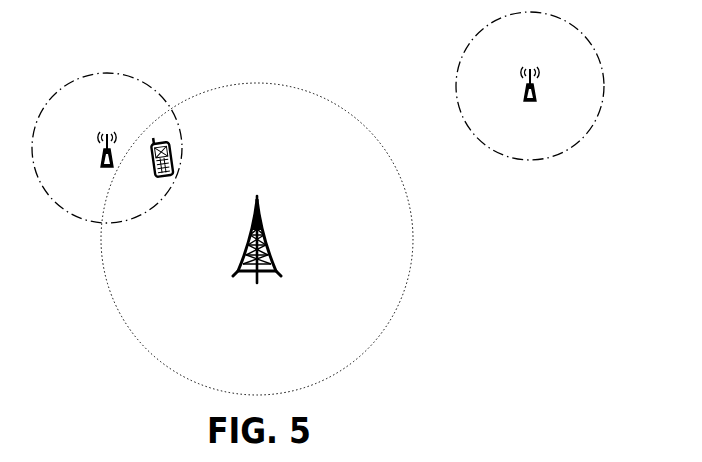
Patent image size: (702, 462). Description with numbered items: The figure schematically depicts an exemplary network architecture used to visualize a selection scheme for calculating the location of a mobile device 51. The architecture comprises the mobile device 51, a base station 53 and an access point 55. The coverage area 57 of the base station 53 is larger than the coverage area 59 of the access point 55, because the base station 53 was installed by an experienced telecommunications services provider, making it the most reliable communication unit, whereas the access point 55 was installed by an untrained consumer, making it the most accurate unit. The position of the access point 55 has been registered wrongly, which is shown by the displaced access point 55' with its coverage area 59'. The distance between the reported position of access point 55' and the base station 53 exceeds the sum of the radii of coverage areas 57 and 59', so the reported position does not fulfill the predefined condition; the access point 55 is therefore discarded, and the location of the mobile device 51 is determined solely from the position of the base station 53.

The mobile device 51 is at (173, 150).
The base station 53 is at (280, 228).
The access point 55 is at (81, 151).
The access point 55' is at (558, 84).
The coverage area 57 is at (323, 93).
The coverage area 59 is at (115, 146).
The coverage area 59' is at (540, 83).